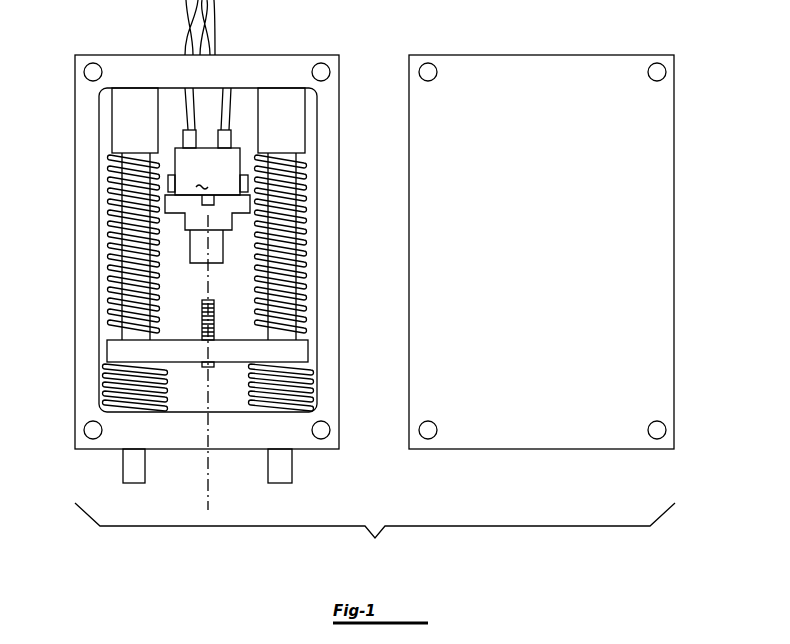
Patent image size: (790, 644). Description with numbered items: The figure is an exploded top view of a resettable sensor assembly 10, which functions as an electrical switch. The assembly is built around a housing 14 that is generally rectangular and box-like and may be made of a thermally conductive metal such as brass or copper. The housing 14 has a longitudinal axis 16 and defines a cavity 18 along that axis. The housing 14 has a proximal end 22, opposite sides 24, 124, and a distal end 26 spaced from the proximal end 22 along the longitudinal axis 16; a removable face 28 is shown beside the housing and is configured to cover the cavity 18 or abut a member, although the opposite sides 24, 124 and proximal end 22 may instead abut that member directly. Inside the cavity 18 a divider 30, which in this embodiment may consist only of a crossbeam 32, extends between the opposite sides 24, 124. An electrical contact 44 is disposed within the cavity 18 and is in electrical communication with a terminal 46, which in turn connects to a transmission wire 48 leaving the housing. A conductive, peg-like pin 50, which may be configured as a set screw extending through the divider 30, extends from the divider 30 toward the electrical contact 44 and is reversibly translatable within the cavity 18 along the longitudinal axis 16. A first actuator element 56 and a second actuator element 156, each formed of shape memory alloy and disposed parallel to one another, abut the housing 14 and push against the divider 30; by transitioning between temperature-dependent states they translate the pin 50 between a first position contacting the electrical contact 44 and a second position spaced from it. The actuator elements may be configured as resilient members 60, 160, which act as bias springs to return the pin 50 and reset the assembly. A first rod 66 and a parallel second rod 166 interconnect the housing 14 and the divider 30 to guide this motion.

The resettable sensor assembly 10 is at (375, 532).
The housing 14 is at (275, 70).
The longitudinal axis 16 is at (208, 497).
The cavity 18 is at (180, 394).
The proximal end 22 is at (82, 438).
The opposite side 24 is at (85, 252).
The distal end 26 is at (128, 66).
The removable face 28 is at (637, 163).
The divider 30 is at (118, 350).
The crossbeam 32 is at (300, 355).
The electrical contact 44 is at (218, 252).
The terminal 46 is at (207, 180).
The transmission wire 48 is at (187, 18).
The pin 50 is at (200, 325).
The first actuator element 56 is at (103, 393).
The first resilient member 60 is at (115, 220).
The first rod 66 is at (113, 193).
The opposite side 124 is at (328, 238).
The second actuator element 156 is at (310, 400).
The upper spring 160 is at (300, 216).
The second rod 166 is at (300, 186).